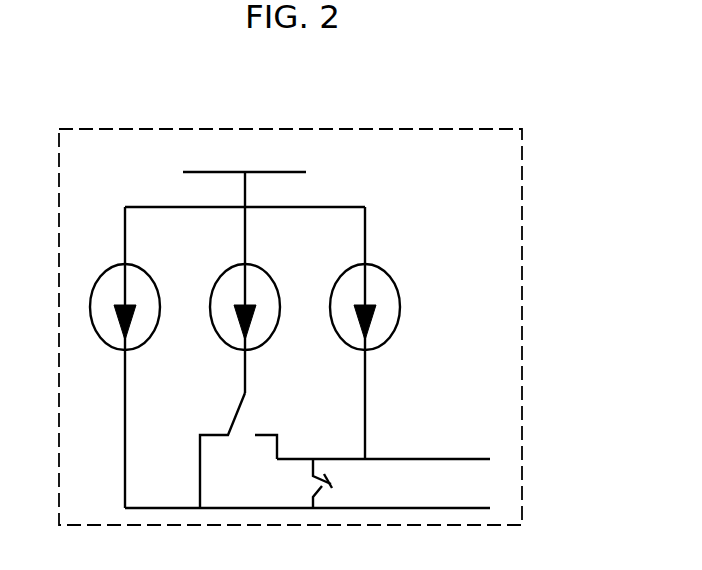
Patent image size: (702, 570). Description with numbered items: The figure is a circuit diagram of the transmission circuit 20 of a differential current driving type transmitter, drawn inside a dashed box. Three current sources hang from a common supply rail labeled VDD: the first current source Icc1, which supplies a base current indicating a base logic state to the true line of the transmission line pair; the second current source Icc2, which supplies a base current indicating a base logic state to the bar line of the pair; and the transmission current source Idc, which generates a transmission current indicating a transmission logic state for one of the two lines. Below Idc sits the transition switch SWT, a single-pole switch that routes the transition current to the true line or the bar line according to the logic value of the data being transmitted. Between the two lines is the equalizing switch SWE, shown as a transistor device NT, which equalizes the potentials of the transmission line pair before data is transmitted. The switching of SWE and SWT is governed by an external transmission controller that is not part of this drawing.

The transmission circuit 20 is at (522, 249).
The supply voltage VDD is at (244, 159).
The second current source Icc2 is at (112, 315).
The transmission current source Idc is at (253, 315).
The first current source Icc1 is at (379, 315).
The transition switch SWT is at (237, 450).
The NMOS transistor NT is at (309, 483).
The equalizing switch SWE is at (347, 492).